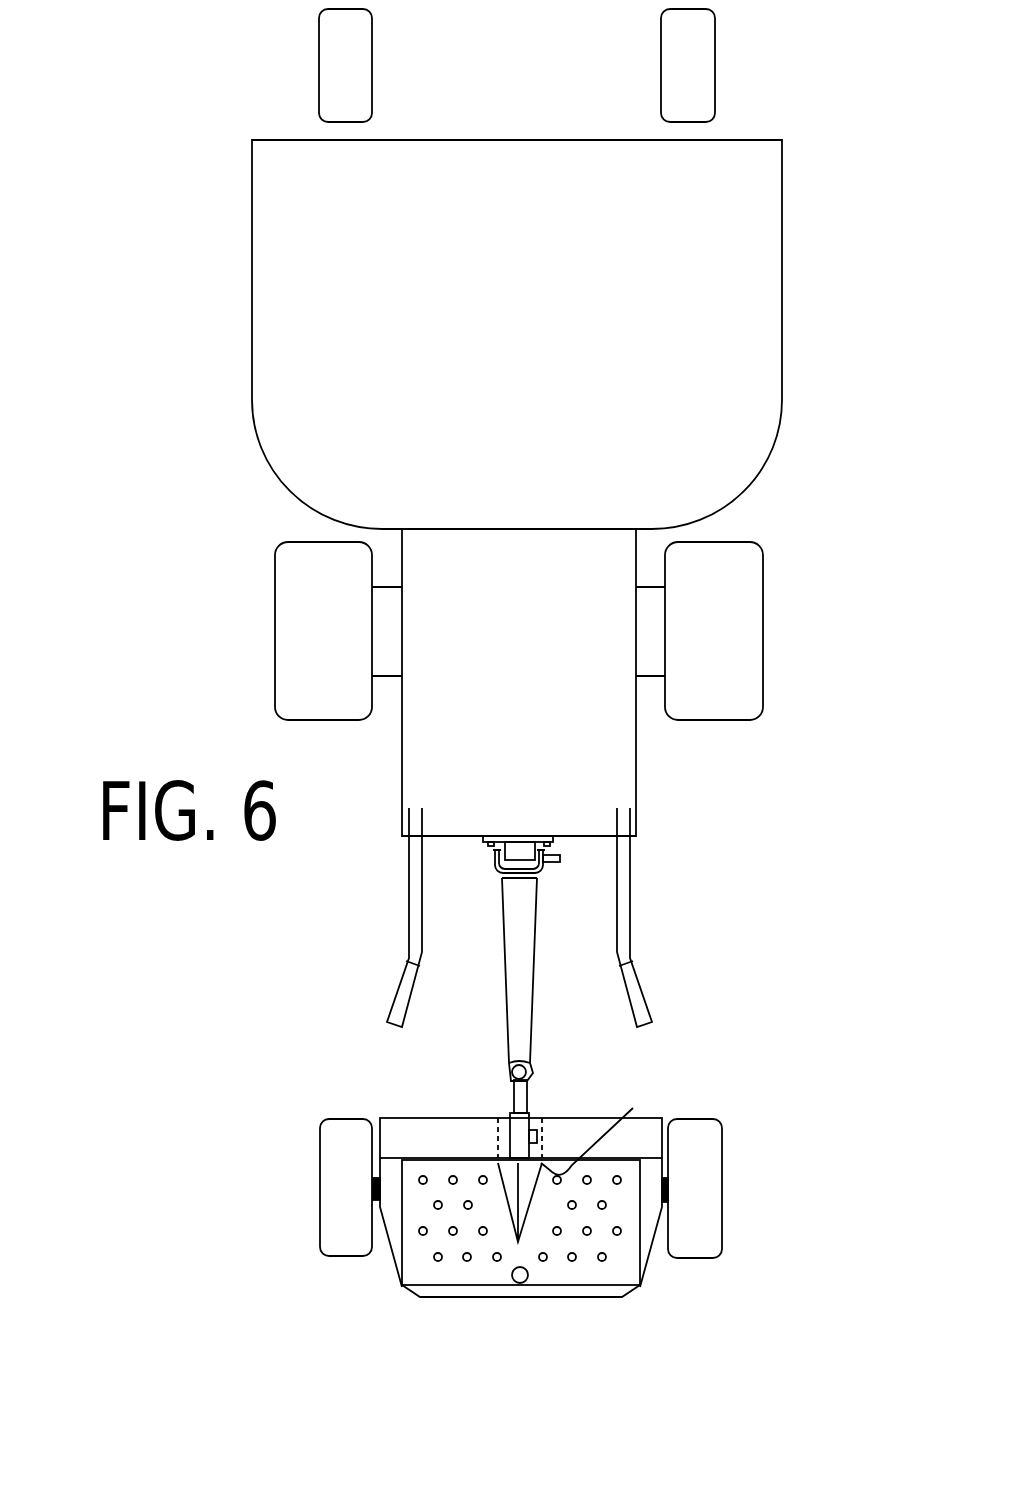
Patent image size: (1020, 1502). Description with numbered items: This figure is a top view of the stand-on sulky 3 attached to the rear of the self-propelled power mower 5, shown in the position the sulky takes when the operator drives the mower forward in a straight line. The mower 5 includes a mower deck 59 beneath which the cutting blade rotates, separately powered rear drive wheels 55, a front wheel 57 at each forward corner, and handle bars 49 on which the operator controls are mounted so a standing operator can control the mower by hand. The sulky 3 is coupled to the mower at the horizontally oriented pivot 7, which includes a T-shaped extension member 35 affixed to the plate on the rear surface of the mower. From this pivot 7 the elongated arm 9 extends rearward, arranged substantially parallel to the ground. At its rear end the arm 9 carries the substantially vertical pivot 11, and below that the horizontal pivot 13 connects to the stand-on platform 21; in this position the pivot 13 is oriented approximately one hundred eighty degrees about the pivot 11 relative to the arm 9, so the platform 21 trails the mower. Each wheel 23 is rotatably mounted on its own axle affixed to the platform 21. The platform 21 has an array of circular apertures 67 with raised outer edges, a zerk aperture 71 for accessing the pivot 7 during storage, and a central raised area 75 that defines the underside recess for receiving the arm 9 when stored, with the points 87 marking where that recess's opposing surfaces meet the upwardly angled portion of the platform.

The stand-on sulky 3 is at (298, 1104).
The power mower 5 is at (248, 464).
The pivot 7 is at (466, 864).
The elongated arm 9 is at (510, 943).
The vertical pivot 11 is at (547, 1062).
The horizontal pivot 13 is at (520, 1095).
The platform 21 is at (568, 1277).
The wheel 23 is at (340, 1196).
The T-shaped extension member 35 is at (513, 845).
The handle bars 49 is at (627, 947).
The rear drive wheels 55 is at (310, 598).
The front wheel 57 is at (678, 70).
The mower deck 59 is at (481, 363).
The circular apertures 67 is at (468, 1262).
The zerk aperture 71 is at (520, 1284).
The central raised area 75 is at (508, 1177).
The points 87 is at (608, 1130).